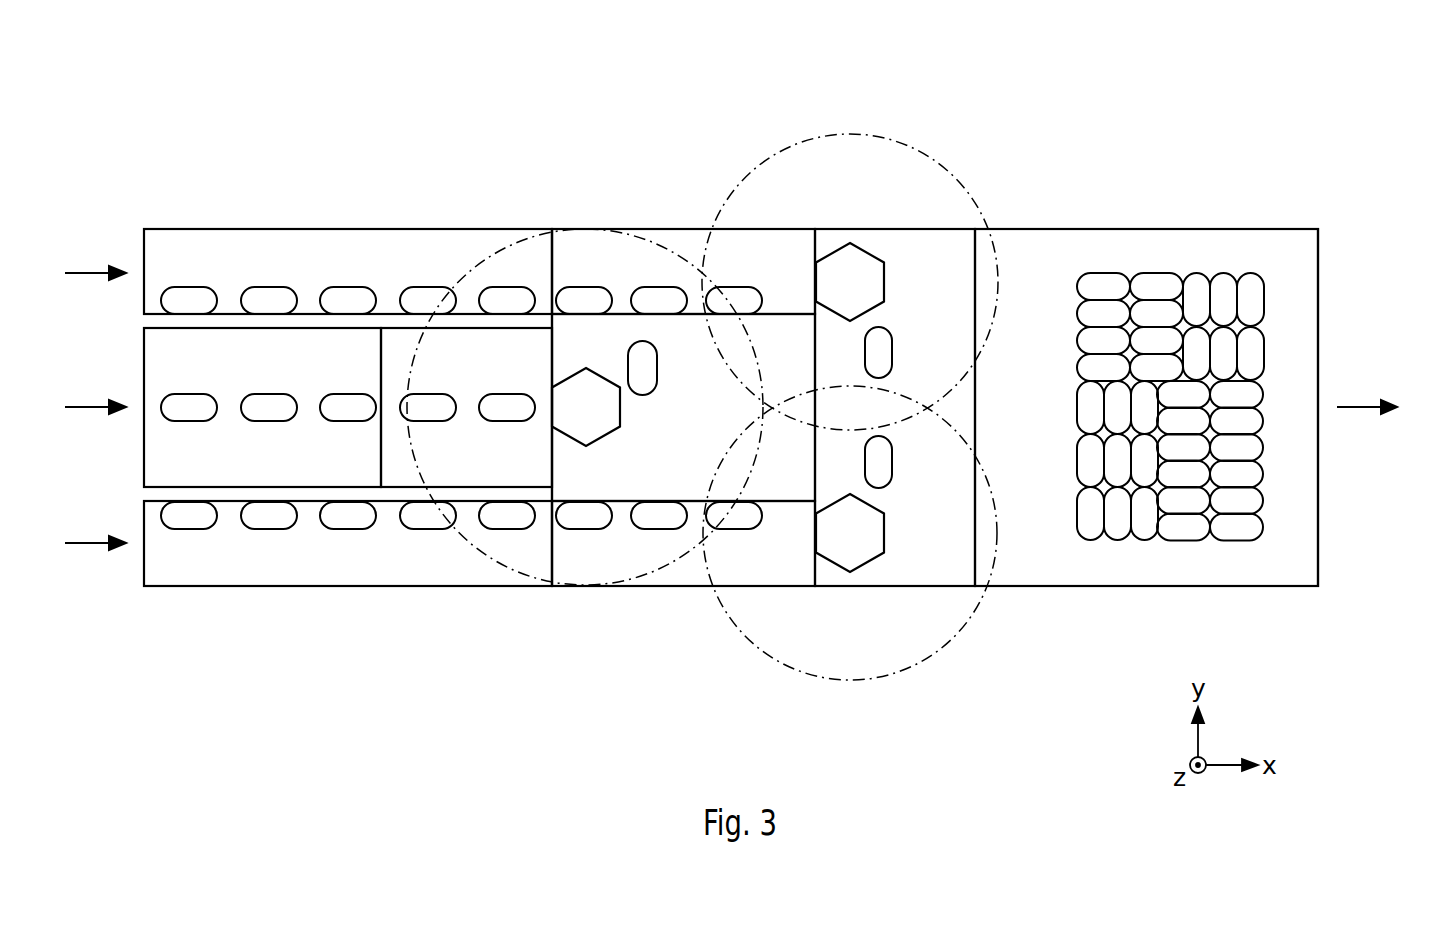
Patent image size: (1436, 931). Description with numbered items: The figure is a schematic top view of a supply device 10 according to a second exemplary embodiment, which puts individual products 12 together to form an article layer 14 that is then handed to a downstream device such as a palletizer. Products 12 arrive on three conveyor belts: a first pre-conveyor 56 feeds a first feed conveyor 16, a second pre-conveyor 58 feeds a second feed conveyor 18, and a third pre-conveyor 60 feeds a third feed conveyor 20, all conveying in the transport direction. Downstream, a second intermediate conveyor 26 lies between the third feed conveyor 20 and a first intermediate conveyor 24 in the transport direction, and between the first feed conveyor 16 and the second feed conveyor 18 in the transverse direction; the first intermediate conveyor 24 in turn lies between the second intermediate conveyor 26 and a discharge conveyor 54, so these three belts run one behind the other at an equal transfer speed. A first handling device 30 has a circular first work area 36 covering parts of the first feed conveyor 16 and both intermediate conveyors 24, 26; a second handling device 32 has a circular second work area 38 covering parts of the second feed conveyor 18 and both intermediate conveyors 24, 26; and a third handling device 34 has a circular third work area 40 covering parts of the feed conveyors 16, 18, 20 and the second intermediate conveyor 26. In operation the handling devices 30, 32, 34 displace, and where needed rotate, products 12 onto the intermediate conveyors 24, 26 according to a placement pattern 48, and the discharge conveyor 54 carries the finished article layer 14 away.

The supply device 10 is at (1358, 176).
The products 12 is at (189, 302).
The article layer 14 is at (1240, 404).
The placement pattern 48 is at (1275, 297).
The first feed conveyor 16 is at (686, 245).
The second feed conveyor 18 is at (690, 572).
The third feed conveyor 20 is at (482, 373).
The first intermediate conveyor 24 is at (946, 486).
The second intermediate conveyor 26 is at (677, 465).
The first handling device 30 is at (870, 283).
The second handling device 32 is at (870, 533).
The third handling device 34 is at (612, 411).
The first work area 36 is at (963, 183).
The second work area 38 is at (963, 625).
The third work area 40 is at (500, 564).
The discharge conveyor 54 is at (1150, 237).
The first pre-conveyor 56 is at (290, 243).
The second pre-conveyor 58 is at (300, 568).
The third pre-conveyor 60 is at (300, 373).